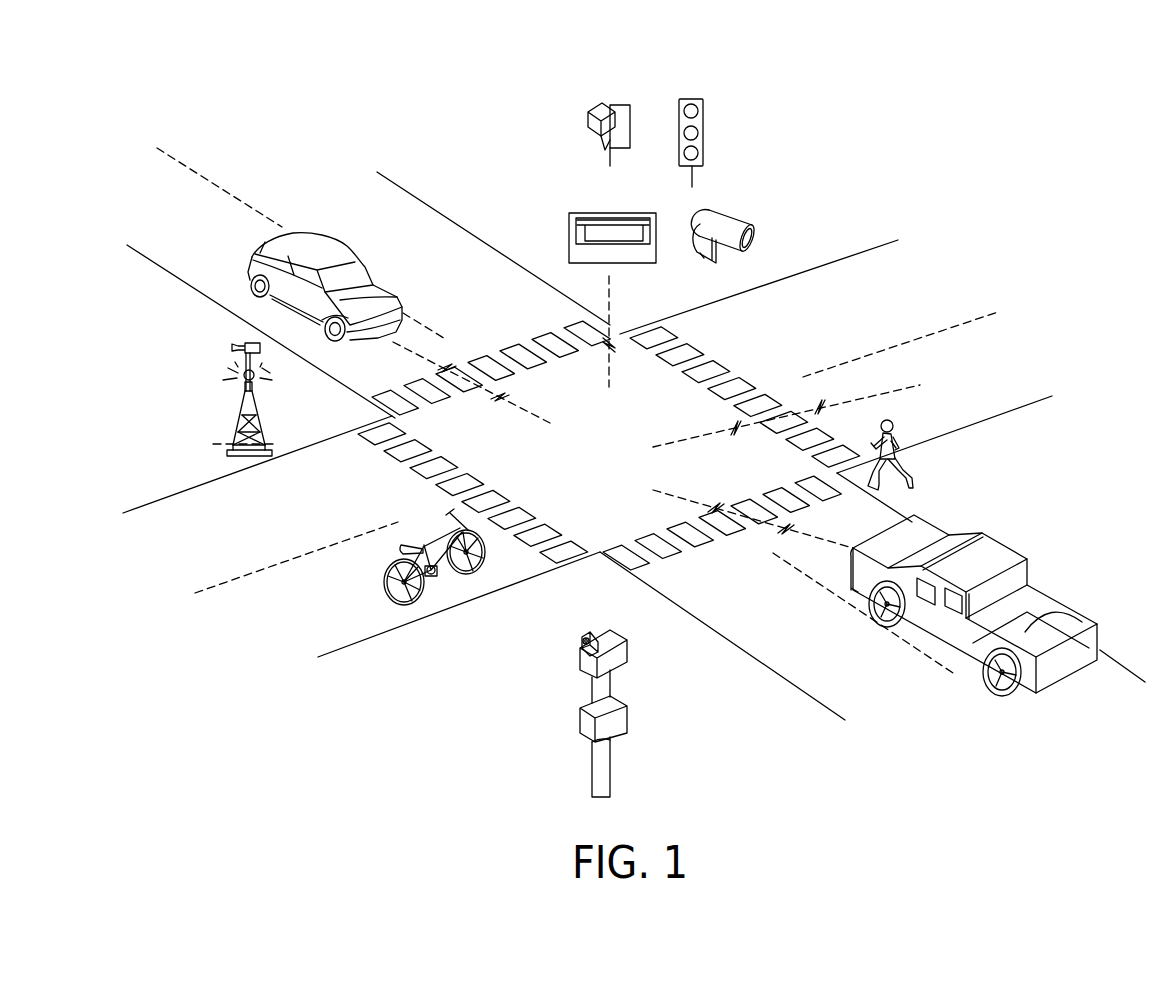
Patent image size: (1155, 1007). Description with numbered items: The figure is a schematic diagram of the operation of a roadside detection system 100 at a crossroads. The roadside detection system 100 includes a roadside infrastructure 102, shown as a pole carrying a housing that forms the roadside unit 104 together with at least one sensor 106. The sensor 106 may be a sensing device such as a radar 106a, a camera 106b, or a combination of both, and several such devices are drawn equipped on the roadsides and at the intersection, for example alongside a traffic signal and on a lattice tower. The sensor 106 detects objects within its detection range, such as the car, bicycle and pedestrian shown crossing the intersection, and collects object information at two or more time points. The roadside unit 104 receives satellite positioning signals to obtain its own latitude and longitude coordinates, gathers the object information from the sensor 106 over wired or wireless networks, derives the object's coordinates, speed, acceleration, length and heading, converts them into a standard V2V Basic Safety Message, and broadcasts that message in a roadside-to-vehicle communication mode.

The roadside detection system 100 is at (381, 104).
The roadside infrastructure 102 is at (637, 743).
The roadside unit 104 is at (569, 239).
The sensor 106 is at (757, 23).
The radar 106a is at (614, 102).
The camera 106b is at (728, 225).